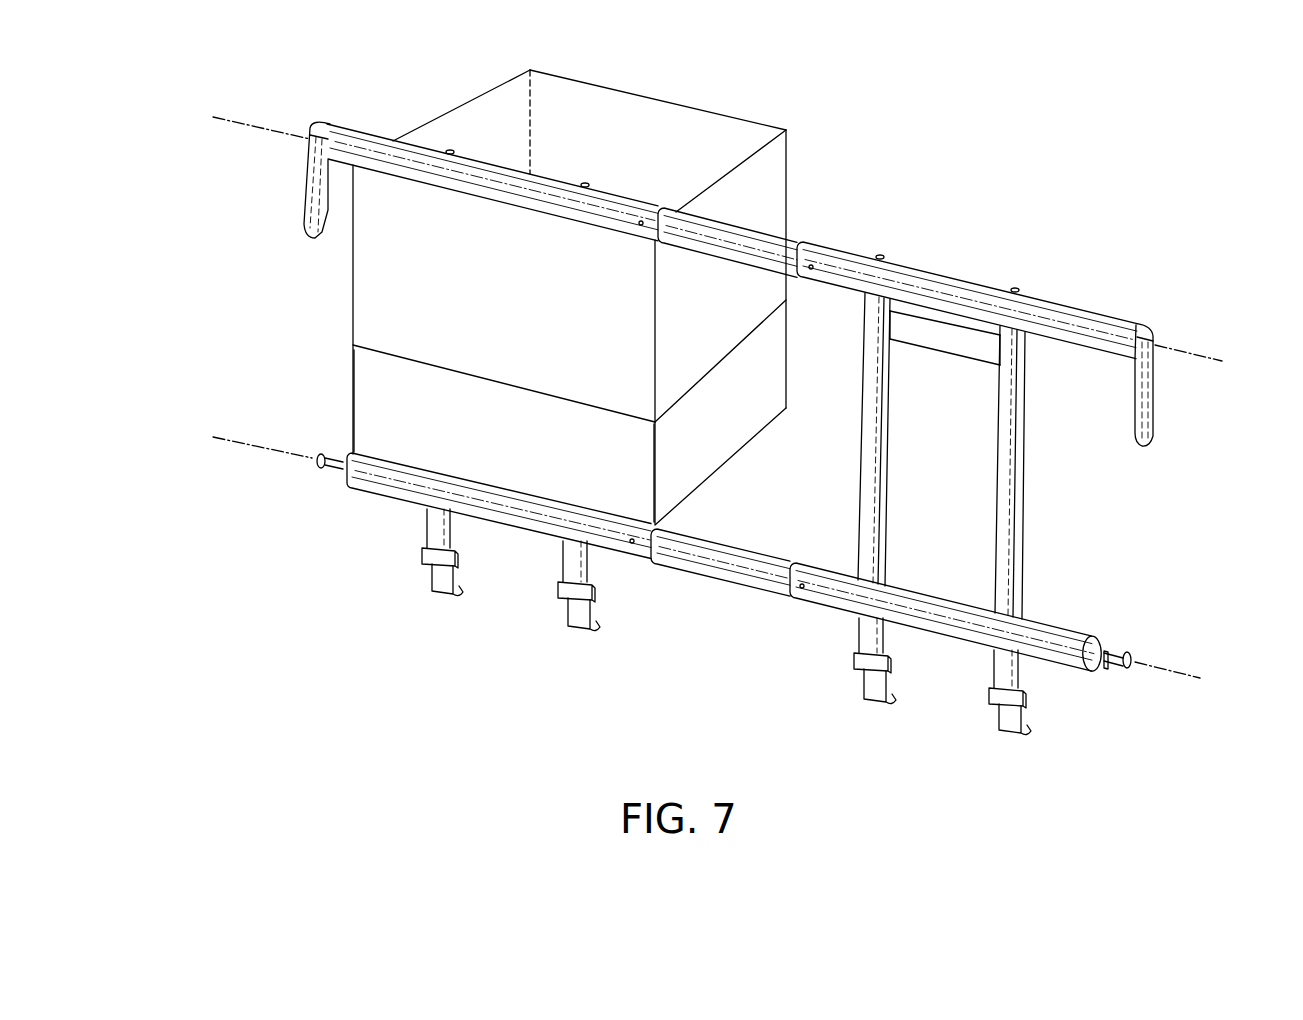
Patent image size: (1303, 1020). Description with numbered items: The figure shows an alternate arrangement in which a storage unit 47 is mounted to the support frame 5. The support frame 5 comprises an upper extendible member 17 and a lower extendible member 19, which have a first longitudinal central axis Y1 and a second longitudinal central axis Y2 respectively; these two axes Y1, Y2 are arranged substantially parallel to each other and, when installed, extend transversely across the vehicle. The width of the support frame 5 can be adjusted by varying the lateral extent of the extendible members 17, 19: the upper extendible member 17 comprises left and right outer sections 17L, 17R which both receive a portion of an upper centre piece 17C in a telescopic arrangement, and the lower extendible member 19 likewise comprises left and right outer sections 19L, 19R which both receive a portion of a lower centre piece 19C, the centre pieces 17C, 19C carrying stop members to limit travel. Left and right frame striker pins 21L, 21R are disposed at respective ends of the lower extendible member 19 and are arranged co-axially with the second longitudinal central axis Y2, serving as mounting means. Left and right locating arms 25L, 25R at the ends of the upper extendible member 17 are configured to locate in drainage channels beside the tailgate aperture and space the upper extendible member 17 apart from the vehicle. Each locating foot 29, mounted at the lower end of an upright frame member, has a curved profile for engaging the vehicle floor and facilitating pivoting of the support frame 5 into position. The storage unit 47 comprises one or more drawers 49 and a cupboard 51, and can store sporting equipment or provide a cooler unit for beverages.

The support frame 5 is at (1150, 160).
The upper extendible member 17 is at (815, 203).
The left outer section 17L is at (507, 168).
The upper centre piece 17C is at (748, 228).
The right outer section 17R is at (1062, 310).
The lower extendible member 19 is at (735, 523).
The left outer section 19L is at (552, 532).
The lower centre piece 19C is at (733, 573).
The right outer section 19R is at (952, 630).
The left frame striker pin 21L is at (327, 468).
The right frame striker pin 21R is at (1107, 665).
The left locating arm 25L is at (307, 196).
The right locating arm 25R is at (1138, 388).
The locating foot 29 is at (438, 577).
The storage unit 47 is at (314, 306).
The drawer 49 is at (521, 449).
The cupboard 51 is at (521, 306).
The first longitudinal central axis Y1 is at (715, 227).
The second longitudinal central axis Y2 is at (704, 544).